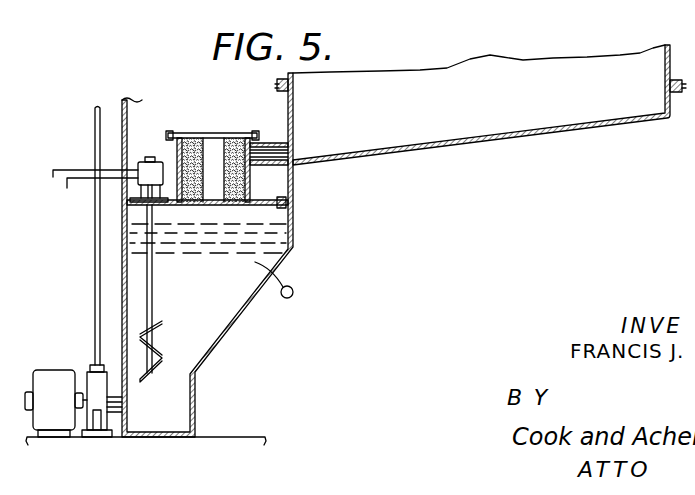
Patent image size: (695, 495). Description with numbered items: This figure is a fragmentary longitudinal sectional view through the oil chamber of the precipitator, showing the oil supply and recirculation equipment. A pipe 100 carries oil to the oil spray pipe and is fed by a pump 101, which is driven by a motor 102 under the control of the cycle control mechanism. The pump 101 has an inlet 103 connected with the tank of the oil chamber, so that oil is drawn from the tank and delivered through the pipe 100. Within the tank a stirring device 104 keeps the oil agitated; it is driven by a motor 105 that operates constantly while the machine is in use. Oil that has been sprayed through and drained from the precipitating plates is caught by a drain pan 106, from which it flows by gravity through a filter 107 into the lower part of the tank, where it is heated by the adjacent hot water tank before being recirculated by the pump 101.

The pipe 100 is at (95, 263).
The pump 101 is at (87, 372).
The motor 102 is at (58, 370).
The inlet 103 is at (118, 409).
The stirring device 104 is at (162, 323).
The motor 105 is at (146, 158).
The drain pan 106 is at (462, 139).
The filter 107 is at (238, 140).